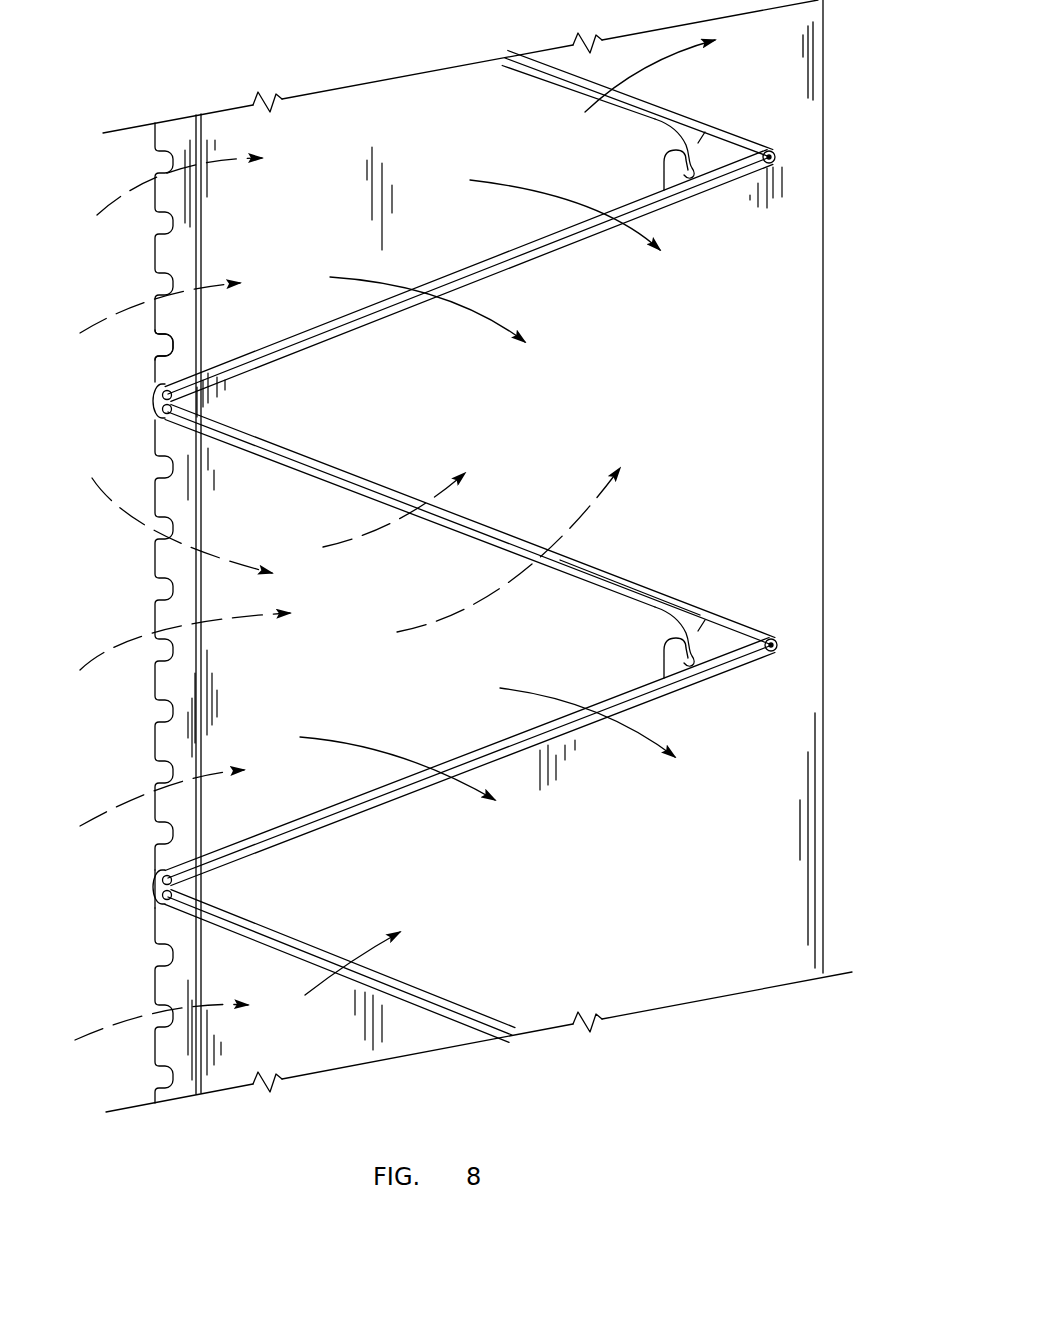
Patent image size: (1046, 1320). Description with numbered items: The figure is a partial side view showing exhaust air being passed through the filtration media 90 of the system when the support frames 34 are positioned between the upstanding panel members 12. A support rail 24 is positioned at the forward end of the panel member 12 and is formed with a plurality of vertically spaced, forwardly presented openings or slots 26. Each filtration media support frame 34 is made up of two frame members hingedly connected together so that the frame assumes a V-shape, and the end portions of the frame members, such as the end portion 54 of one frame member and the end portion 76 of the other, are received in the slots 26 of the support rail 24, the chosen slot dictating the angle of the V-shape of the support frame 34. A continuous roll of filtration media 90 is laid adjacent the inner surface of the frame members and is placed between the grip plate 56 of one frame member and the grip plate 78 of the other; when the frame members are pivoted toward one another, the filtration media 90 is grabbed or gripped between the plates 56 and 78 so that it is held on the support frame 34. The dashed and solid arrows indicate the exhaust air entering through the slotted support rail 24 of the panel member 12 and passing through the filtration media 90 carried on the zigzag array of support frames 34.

The first upstanding panel member 12 is at (672, 942).
The support rail 24 is at (153, 726).
The slots 26 is at (152, 345).
The filtration media support frame 34 is at (568, 252).
The end portion 54 is at (162, 905).
The grip plate 56 is at (708, 150).
The end portion 76 is at (162, 870).
The grip plate 78 is at (674, 180).
The filtration media 90 is at (622, 592).